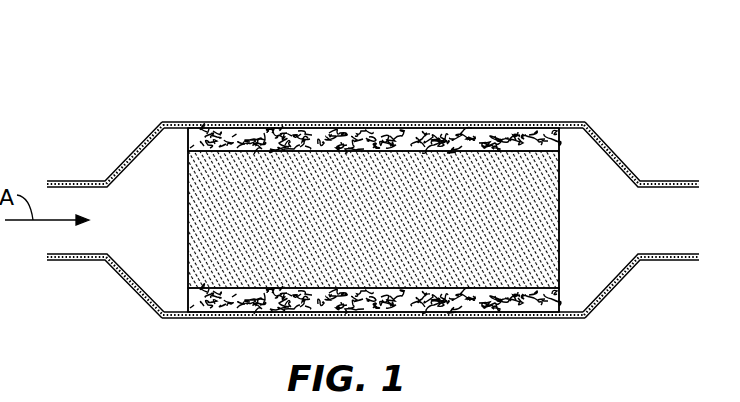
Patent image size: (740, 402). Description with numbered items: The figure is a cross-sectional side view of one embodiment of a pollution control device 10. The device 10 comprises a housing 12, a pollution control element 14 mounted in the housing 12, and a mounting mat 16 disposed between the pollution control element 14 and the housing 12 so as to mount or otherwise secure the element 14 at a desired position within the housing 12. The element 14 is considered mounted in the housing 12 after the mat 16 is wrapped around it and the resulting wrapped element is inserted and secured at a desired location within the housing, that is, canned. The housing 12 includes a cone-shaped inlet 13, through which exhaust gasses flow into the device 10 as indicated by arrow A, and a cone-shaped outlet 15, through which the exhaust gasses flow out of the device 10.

The pollution control device 10 is at (373, 171).
The housing 12 is at (243, 125).
The cone-shaped inlet 13 is at (131, 289).
The pollution control element 14 is at (311, 178).
The cone-shaped outlet 15 is at (625, 163).
The mounting mat 16 is at (478, 135).